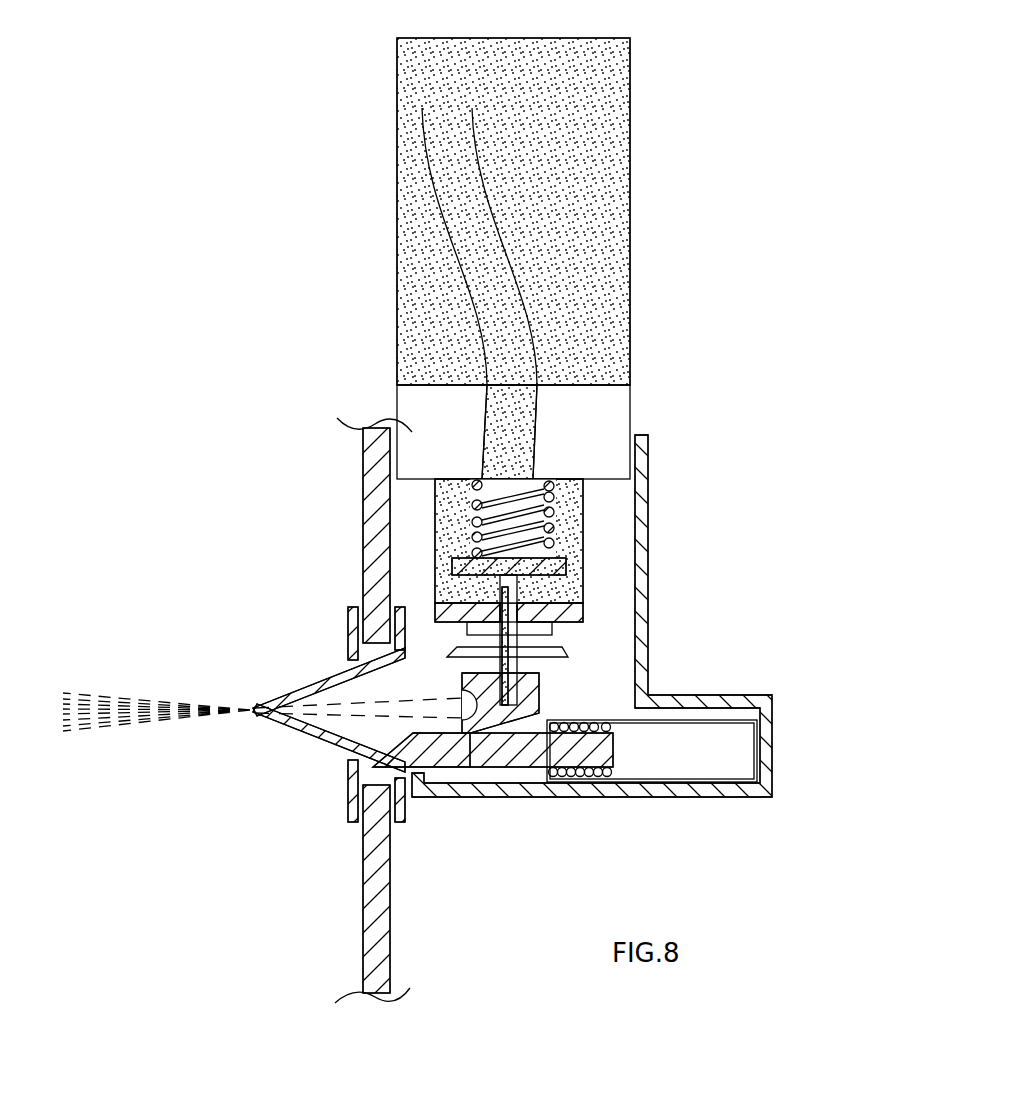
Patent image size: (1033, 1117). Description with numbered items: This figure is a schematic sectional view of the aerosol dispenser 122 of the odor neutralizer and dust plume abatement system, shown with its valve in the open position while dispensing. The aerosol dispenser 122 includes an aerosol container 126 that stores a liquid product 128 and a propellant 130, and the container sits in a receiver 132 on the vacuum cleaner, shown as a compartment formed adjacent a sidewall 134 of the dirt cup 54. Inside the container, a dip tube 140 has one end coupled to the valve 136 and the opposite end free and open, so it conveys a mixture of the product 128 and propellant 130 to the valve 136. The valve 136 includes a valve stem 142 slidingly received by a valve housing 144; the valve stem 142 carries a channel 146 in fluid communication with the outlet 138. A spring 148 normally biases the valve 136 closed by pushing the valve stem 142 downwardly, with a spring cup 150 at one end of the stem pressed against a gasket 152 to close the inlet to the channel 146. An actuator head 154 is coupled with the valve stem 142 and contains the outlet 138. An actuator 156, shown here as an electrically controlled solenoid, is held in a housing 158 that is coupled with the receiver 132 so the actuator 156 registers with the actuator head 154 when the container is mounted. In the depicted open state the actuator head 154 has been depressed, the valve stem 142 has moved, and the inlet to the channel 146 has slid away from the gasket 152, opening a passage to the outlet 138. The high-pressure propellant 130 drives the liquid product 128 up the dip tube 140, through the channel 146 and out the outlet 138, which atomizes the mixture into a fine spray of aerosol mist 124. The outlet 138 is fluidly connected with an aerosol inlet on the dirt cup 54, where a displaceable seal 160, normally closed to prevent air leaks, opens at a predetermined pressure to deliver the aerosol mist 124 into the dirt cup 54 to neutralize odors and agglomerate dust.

The dirt cup 54 is at (134, 658).
The aerosol dispenser 122 is at (386, 124).
The aerosol mist 124 is at (165, 727).
The aerosol container 126 is at (630, 222).
The liquid product 128 is at (603, 72).
The propellant 130 is at (413, 400).
The receiver 132 is at (648, 672).
The sidewall 134 is at (380, 570).
The valve 136 is at (426, 550).
The outlet 138 is at (413, 734).
The dip tube 140 is at (460, 290).
The valve stem 142 is at (520, 663).
The valve housing 144 is at (583, 515).
The channel 146 is at (510, 687).
The spring 148 is at (550, 480).
The spring cup 150 is at (566, 565).
The gasket 152 is at (583, 613).
The actuator head 154 is at (510, 768).
The actuator 156 is at (680, 790).
The housing 158 is at (713, 697).
The displaceable seal 160 is at (283, 700).